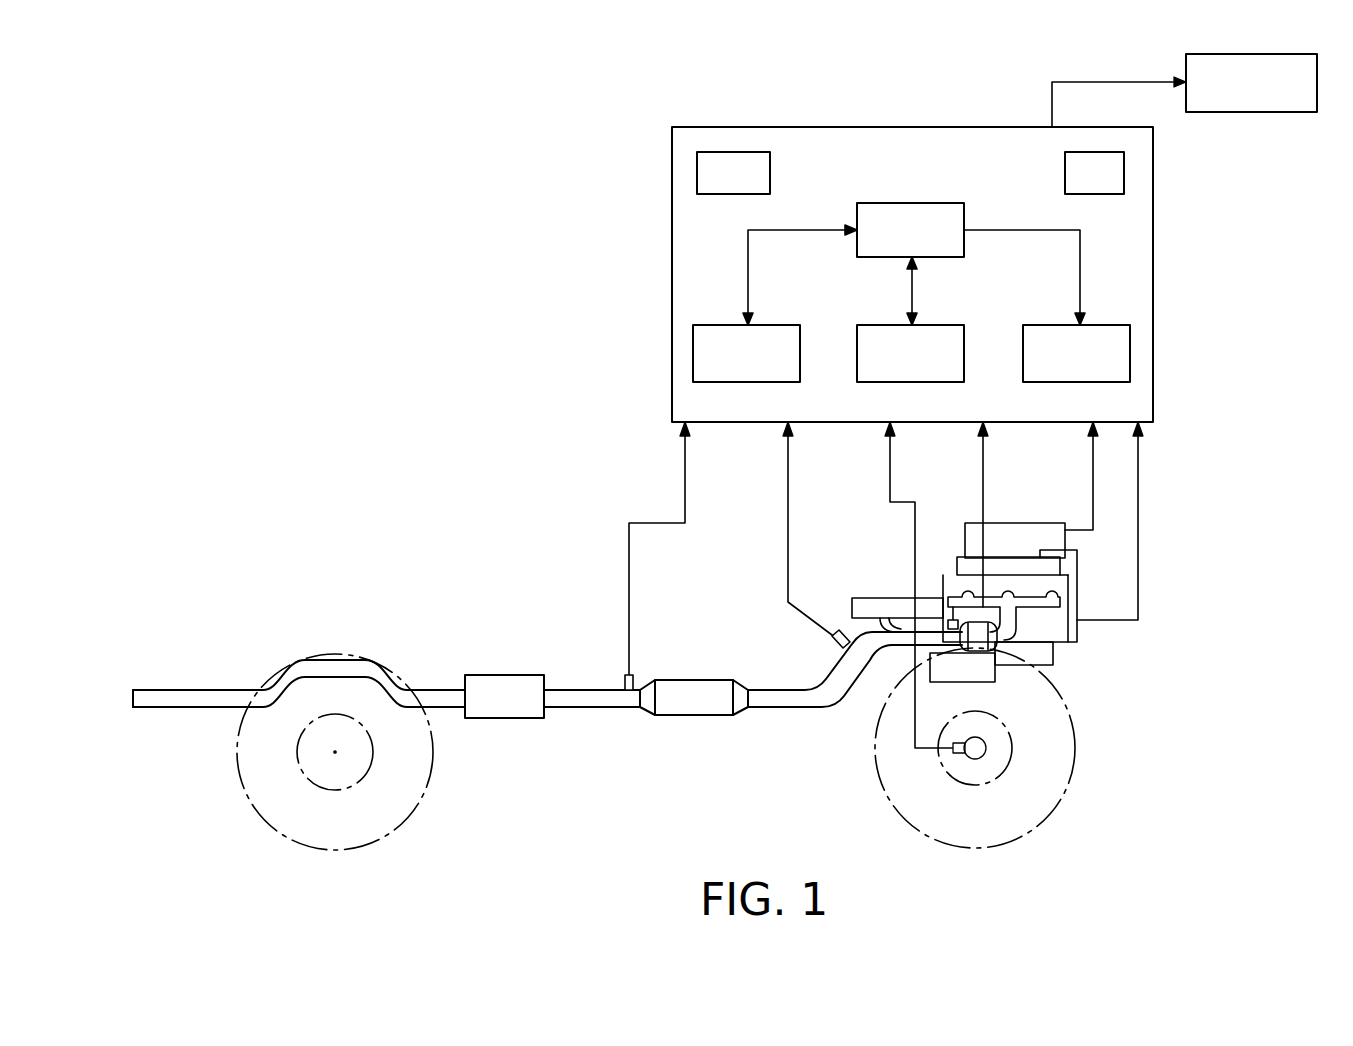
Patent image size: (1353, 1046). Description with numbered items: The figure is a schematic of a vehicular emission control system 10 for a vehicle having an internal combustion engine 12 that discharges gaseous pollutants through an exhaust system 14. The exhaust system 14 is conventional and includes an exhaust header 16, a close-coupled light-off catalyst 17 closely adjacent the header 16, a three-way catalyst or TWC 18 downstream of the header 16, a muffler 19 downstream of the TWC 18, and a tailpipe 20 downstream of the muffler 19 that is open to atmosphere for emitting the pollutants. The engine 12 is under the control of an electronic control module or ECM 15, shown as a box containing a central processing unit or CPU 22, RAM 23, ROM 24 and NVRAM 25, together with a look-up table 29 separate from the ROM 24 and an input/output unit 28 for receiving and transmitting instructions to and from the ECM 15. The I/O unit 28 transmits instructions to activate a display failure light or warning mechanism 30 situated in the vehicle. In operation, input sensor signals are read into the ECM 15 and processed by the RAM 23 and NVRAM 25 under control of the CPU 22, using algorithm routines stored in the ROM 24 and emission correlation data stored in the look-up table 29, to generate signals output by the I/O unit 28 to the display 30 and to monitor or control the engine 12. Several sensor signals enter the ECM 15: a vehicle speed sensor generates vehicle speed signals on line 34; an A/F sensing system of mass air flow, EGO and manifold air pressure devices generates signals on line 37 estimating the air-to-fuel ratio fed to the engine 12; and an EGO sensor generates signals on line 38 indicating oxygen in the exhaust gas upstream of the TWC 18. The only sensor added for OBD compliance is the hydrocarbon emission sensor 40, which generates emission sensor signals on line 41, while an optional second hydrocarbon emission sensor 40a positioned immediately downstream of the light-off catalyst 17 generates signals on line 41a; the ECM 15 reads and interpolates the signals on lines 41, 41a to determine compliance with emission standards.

The vehicular emission control system 10 is at (1268, 311).
The internal combustion engine 12 is at (1053, 633).
The exhaust system 14 is at (547, 712).
The electronic control module (ECM) 15 is at (1153, 251).
The exhaust header 16 is at (1052, 597).
The light-off catalyst 17 is at (980, 645).
The three-way catalyst (TWC) 18 is at (690, 715).
The muffler 19 is at (503, 712).
The tailpipe 20 is at (192, 700).
The central processing unit (CPU) 22 is at (940, 257).
The RAM 23 is at (742, 382).
The ROM 24 is at (907, 382).
The NVRAM 25 is at (1055, 382).
The input/output unit (I/O) 28 is at (1100, 194).
The look-up table (LUT) 29 is at (712, 194).
The display failure light or warning mechanism 30 is at (1260, 112).
The vehicle speed signal line 34 is at (913, 735).
The A/F sensing system signal line 37 is at (1097, 492).
The EGO sensor signal line 38 is at (786, 550).
The hydrocarbon emission sensor 40 is at (618, 669).
The second hydrocarbon emission sensor 40a is at (938, 616).
The emission sensor signal line 41 is at (628, 572).
The second emission sensor signal line 41a is at (988, 488).